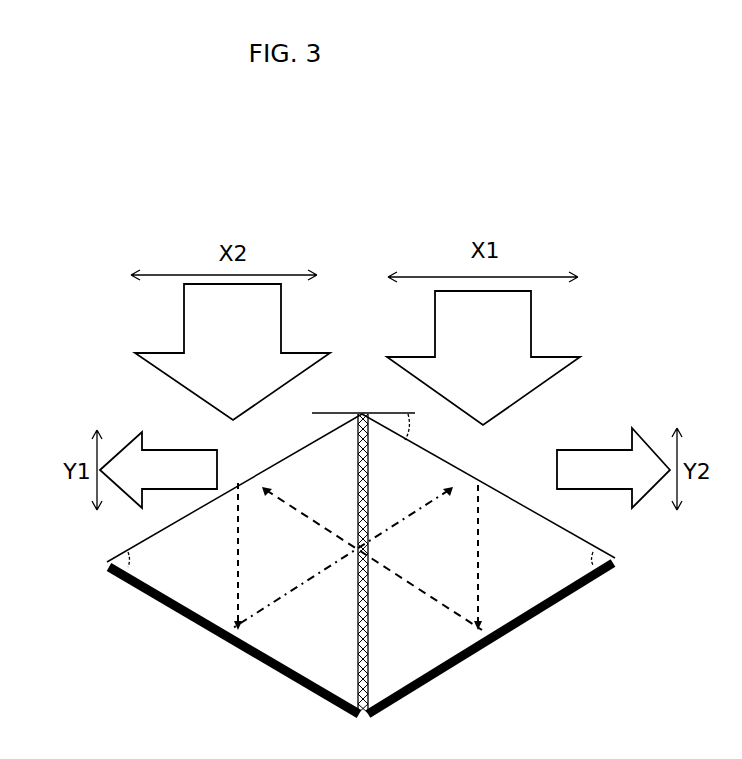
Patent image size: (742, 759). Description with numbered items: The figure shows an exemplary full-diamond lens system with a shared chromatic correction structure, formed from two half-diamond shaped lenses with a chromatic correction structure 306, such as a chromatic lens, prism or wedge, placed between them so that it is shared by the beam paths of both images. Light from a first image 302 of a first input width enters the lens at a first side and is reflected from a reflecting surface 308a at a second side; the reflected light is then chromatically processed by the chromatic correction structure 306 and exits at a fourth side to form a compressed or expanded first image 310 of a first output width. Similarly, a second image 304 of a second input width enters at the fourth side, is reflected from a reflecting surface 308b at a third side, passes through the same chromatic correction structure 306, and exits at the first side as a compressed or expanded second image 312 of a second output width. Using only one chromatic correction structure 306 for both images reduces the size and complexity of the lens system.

The first image 302 is at (489, 358).
The second image 304 is at (228, 352).
The chromatic correction structure 306 is at (382, 620).
The reflecting surface 308a is at (611, 579).
The reflecting surface 308b is at (200, 564).
The compressed or expanded first image 310 is at (158, 464).
The compressed or expanded second image 312 is at (613, 464).